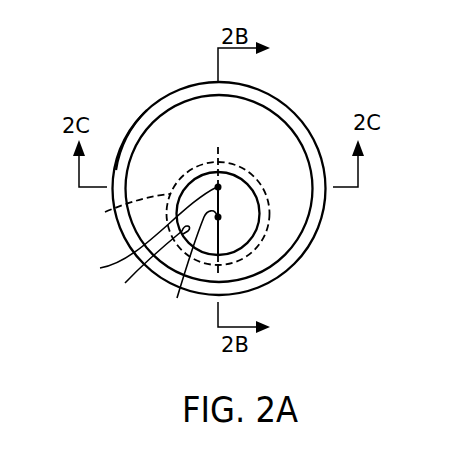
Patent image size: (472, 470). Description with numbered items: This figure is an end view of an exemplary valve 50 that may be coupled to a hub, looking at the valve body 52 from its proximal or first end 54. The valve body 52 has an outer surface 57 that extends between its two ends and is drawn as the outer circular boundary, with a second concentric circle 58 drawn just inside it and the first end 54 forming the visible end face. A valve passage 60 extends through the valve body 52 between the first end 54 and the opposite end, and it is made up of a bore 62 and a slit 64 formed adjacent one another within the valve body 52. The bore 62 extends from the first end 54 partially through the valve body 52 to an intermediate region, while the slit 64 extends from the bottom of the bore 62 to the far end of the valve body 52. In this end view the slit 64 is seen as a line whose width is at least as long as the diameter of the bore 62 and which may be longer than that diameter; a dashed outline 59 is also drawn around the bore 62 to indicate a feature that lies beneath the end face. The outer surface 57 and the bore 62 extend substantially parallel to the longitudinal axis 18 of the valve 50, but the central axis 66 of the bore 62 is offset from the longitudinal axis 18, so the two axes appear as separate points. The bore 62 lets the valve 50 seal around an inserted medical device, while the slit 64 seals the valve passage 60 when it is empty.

The valve 50 is at (219, 181).
The valve body 52 is at (195, 83).
The outer surface 57 is at (147, 110).
The inner wall 58 is at (288, 120).
The first end 54 is at (282, 238).
The hidden channel 59 is at (105, 212).
The longitudinal axis 18 is at (147, 233).
The bore 62 is at (148, 268).
The slit 64 is at (218, 200).
The central axis 66 is at (190, 266).
The valve passage 60 is at (240, 237).